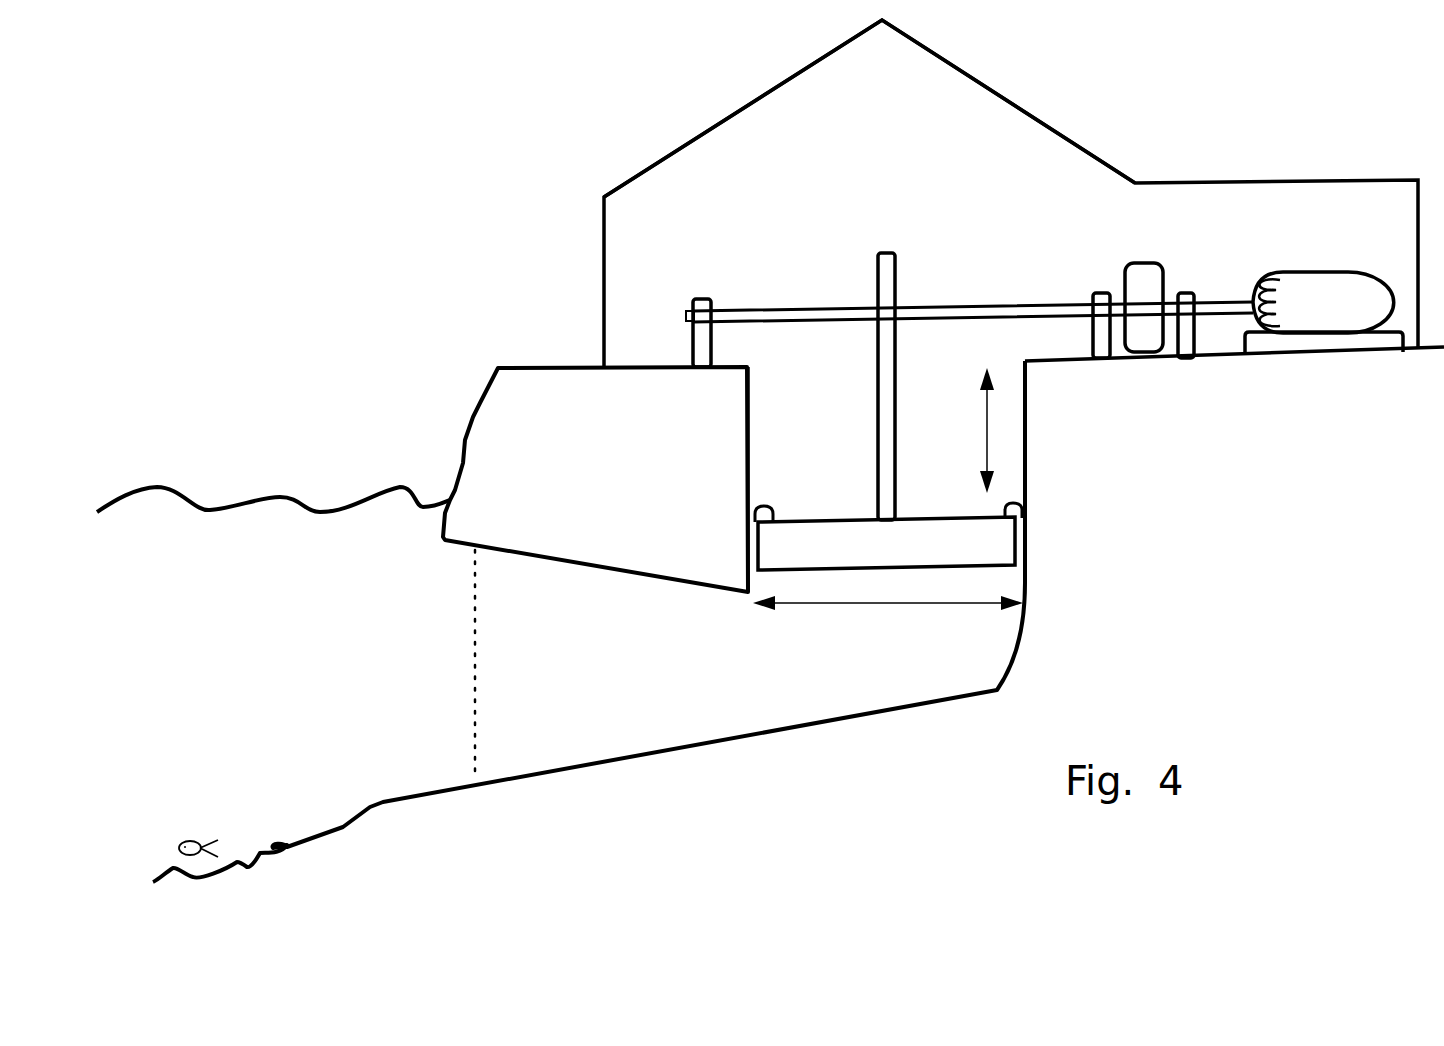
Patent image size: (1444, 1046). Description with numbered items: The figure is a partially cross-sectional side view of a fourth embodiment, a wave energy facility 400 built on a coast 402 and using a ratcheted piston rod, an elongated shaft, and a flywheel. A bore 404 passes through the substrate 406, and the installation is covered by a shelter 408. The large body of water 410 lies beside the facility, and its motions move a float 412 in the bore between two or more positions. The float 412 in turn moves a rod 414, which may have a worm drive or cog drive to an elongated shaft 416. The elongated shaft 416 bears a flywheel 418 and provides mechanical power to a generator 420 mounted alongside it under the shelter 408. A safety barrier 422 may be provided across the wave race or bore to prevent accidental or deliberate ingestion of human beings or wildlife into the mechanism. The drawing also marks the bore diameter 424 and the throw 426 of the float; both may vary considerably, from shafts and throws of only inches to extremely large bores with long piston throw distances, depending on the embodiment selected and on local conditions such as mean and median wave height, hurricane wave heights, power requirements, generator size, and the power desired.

The wave energy facility 400 is at (385, 200).
The coast 402 is at (472, 418).
The bore 404 is at (886, 476).
The substrate 406 is at (798, 614).
The shelter 408 is at (687, 142).
The large body of water 410 is at (168, 493).
The float 412 is at (952, 545).
The rod 414 is at (882, 250).
The elongated shaft 416 is at (750, 305).
The flywheel 418 is at (1142, 263).
The generator 420 is at (1332, 300).
The safety barrier 422 is at (475, 712).
The bore diameter 424 is at (922, 600).
The throw 426 is at (988, 418).